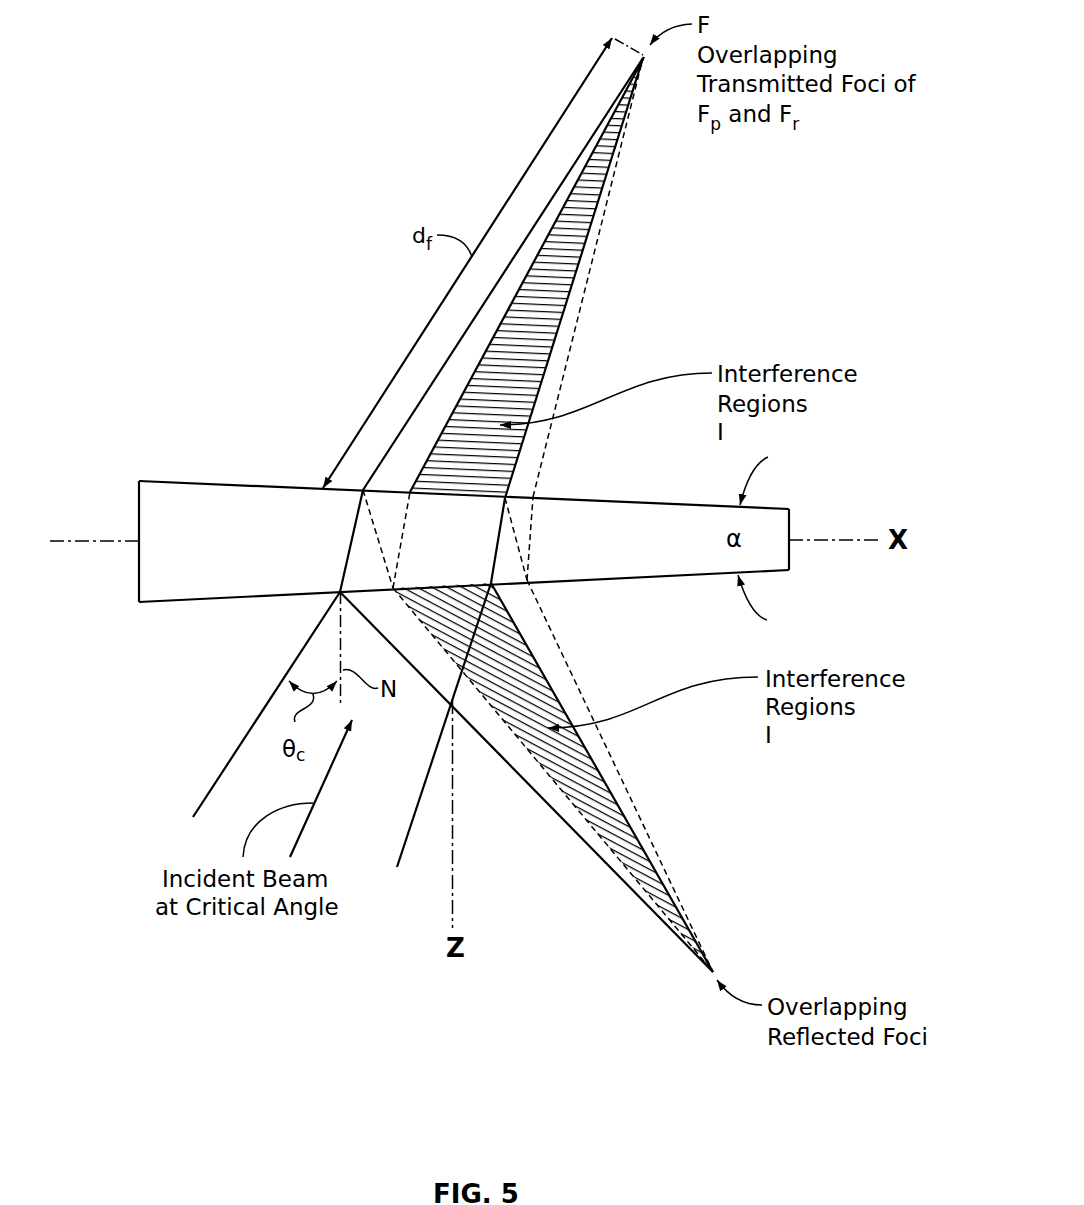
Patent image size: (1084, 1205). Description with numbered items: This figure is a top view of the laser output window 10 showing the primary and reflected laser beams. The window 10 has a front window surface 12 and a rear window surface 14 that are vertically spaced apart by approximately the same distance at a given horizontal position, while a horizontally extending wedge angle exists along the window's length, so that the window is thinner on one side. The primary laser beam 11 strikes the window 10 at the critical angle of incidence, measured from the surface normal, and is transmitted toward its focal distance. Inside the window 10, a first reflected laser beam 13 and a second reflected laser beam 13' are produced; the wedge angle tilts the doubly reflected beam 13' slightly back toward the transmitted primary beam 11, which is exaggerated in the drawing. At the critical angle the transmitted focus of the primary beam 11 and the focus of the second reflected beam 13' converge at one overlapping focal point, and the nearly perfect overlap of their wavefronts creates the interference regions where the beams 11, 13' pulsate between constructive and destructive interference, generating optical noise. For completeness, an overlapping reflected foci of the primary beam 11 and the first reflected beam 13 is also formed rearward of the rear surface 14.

The laser output window 10 is at (439, 530).
The primary laser beam 11 is at (419, 403).
The front window surface 12 is at (257, 483).
The first reflected laser beam 13 is at (511, 731).
The second reflected laser beam 13' is at (500, 322).
The rear window surface 14 is at (690, 577).